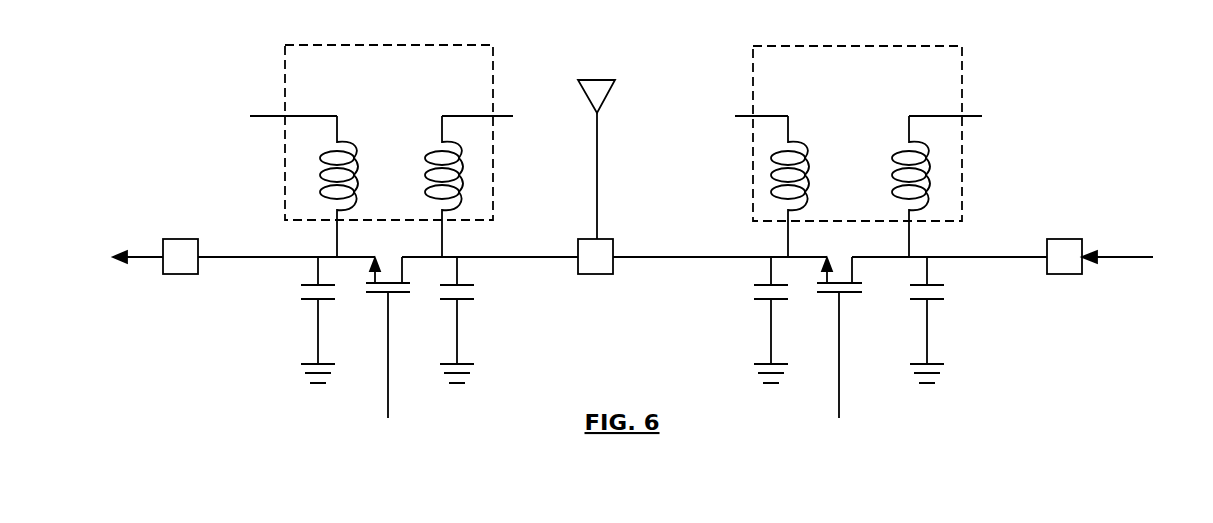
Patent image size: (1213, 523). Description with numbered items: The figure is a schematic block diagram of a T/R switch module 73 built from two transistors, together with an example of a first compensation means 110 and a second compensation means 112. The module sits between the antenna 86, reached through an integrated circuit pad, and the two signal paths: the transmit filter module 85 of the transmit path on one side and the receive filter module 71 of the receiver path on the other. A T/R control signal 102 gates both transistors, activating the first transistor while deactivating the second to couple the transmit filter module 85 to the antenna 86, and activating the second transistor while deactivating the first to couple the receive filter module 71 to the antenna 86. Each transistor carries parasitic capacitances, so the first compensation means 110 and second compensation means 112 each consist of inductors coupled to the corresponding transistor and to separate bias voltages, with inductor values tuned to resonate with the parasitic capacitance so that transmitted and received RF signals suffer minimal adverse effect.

The receive filter module 71 is at (106, 258).
The T/R switch module 73 is at (631, 263).
The transmit filter module 85 is at (1147, 260).
The antenna 86 is at (596, 146).
The T/R control signal 102 is at (613, 387).
The first compensation means 110 is at (853, 151).
The second compensation means 112 is at (377, 151).